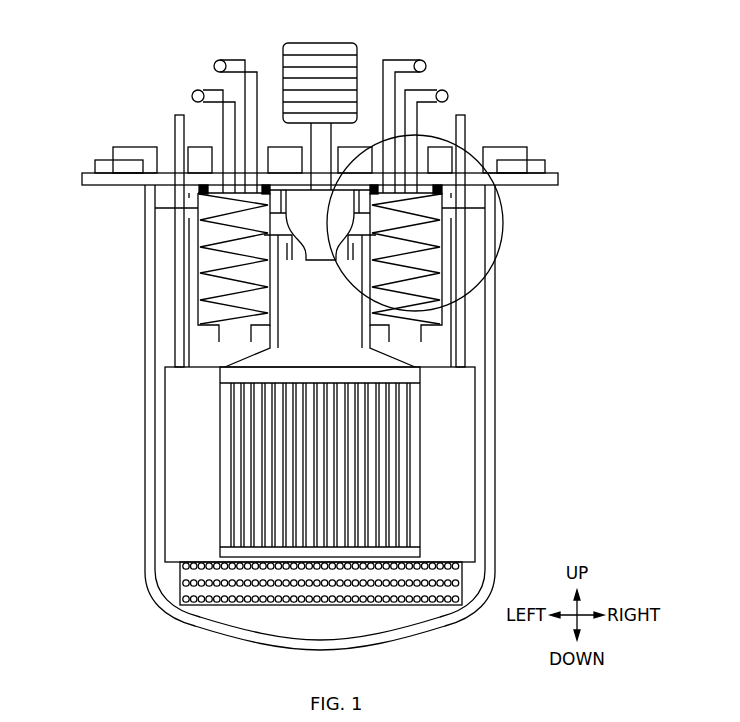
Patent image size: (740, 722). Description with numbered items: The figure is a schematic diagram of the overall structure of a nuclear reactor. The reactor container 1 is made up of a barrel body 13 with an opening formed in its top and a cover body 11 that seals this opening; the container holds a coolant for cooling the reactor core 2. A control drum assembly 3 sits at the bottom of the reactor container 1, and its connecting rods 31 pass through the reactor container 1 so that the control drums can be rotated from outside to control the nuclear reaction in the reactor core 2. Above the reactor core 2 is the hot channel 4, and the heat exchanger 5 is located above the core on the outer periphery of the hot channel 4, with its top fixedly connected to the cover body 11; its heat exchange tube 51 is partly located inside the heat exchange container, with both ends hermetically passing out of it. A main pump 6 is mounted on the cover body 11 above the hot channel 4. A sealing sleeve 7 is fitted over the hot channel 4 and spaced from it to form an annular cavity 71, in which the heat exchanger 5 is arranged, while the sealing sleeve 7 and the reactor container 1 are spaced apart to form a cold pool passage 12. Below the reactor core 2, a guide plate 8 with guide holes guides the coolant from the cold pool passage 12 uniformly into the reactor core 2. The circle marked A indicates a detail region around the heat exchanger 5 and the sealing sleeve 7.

The reactor container 1 is at (137, 265).
The cover body 11 is at (108, 186).
The barrel body 13 is at (144, 432).
The reactor core 2 is at (235, 465).
The control drum assembly 3 is at (475, 415).
The connecting rods 31 is at (467, 130).
The hot channel 4 is at (278, 332).
The heat exchanger 5 is at (270, 268).
The heat exchange tube 51 is at (212, 91).
The main pump 6 is at (357, 44).
The sealing sleeve 7 is at (452, 310).
The annular cavity 71 is at (442, 347).
The guide plate 8 is at (225, 605).
The cold pool passage 12 is at (480, 255).
The detail region A is at (502, 222).